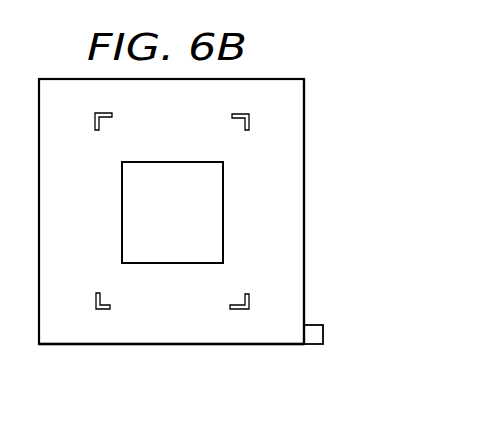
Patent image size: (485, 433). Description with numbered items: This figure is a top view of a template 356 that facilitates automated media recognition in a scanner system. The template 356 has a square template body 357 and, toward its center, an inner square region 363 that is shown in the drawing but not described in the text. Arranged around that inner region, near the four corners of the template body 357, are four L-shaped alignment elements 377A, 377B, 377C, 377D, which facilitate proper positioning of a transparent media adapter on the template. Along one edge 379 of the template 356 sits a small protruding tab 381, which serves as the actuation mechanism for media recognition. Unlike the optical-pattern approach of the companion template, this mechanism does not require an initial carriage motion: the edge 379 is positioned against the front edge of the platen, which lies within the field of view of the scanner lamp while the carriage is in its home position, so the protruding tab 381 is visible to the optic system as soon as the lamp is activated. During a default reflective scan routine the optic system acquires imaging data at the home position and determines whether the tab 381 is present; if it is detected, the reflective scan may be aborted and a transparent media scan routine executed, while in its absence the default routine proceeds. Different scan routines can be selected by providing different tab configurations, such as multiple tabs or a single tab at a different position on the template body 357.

The template 356 is at (306, 50).
The template body 357 is at (298, 213).
The die attach area 363 is at (191, 223).
The alignment element 377A is at (97, 292).
The alignment element 377B is at (230, 306).
The alignment element 377C is at (243, 131).
The alignment element 377D is at (112, 116).
The edge 379 is at (79, 346).
The protruding tab 381 is at (313, 347).